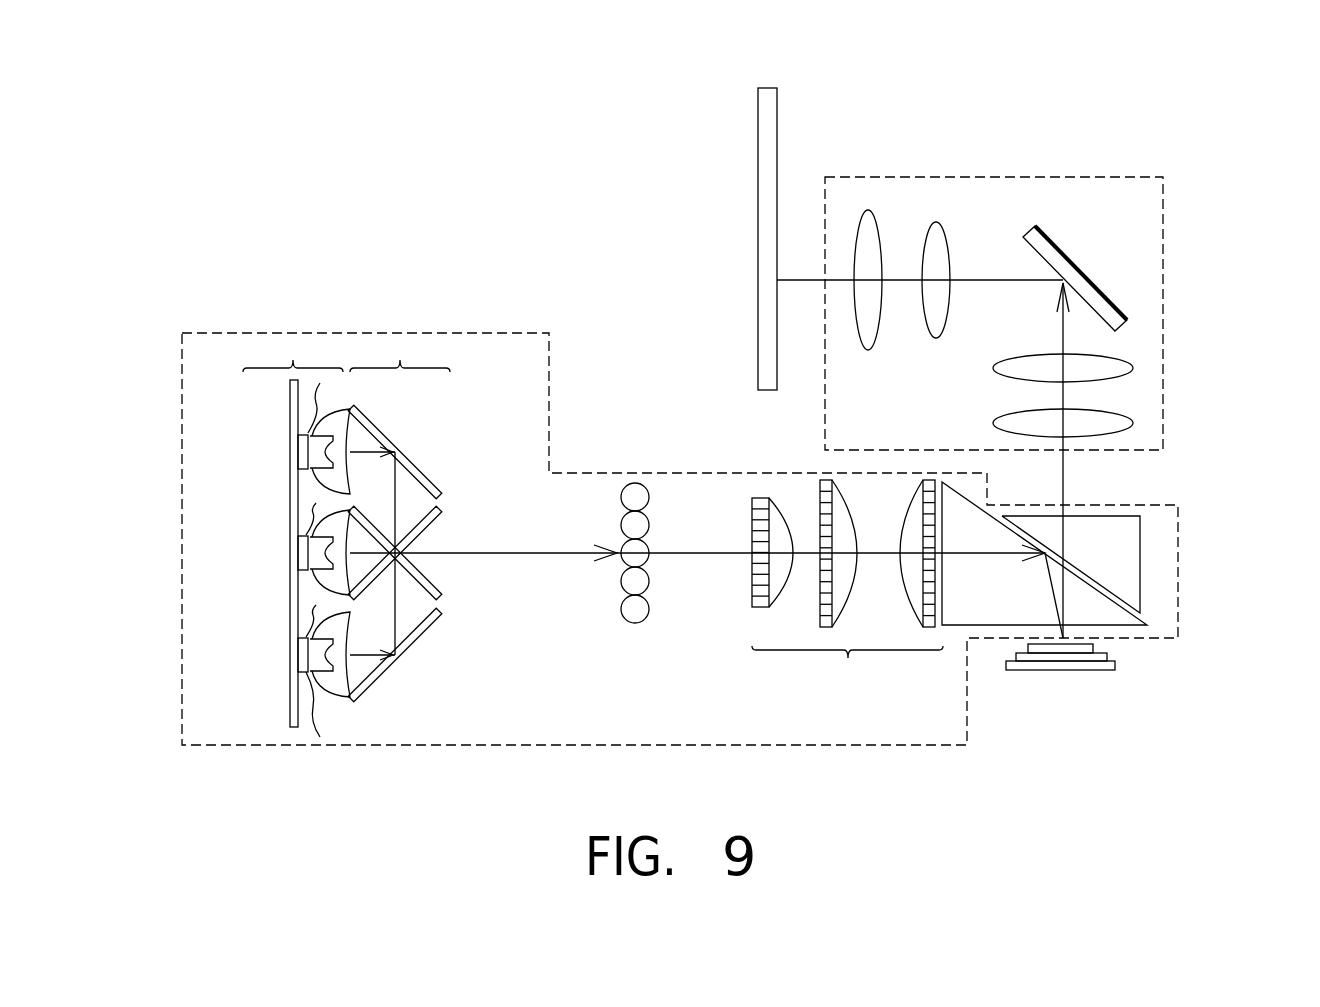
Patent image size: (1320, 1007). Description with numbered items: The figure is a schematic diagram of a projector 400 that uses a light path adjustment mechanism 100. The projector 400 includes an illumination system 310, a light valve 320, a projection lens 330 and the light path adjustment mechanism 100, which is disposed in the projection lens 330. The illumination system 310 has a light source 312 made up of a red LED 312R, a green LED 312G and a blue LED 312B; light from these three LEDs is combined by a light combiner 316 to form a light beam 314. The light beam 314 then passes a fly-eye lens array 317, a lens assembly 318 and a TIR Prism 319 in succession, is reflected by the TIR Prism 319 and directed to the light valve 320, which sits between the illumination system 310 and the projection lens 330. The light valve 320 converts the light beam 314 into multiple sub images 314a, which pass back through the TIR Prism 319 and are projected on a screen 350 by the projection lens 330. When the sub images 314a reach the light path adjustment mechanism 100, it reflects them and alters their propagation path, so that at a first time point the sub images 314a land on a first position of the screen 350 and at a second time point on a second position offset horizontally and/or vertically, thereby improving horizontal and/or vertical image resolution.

The projector 400 is at (175, 49).
The illumination system 310 is at (595, 473).
The light source 312 is at (294, 358).
The red LED 312R is at (303, 452).
The green LED 312G is at (303, 553).
The blue LED 312B is at (300, 655).
The light combiner 316 is at (399, 358).
The light beam 314 is at (527, 555).
The sub images 314a is at (1063, 537).
The fly-eye lens array 317 is at (643, 610).
The lens assembly 318 is at (847, 591).
The TIR Prism 319 is at (1141, 573).
The light valve 320 is at (1078, 650).
The projection lens 330 is at (970, 259).
The light path adjustment mechanism 100 is at (1080, 283).
The screen 350 is at (762, 180).